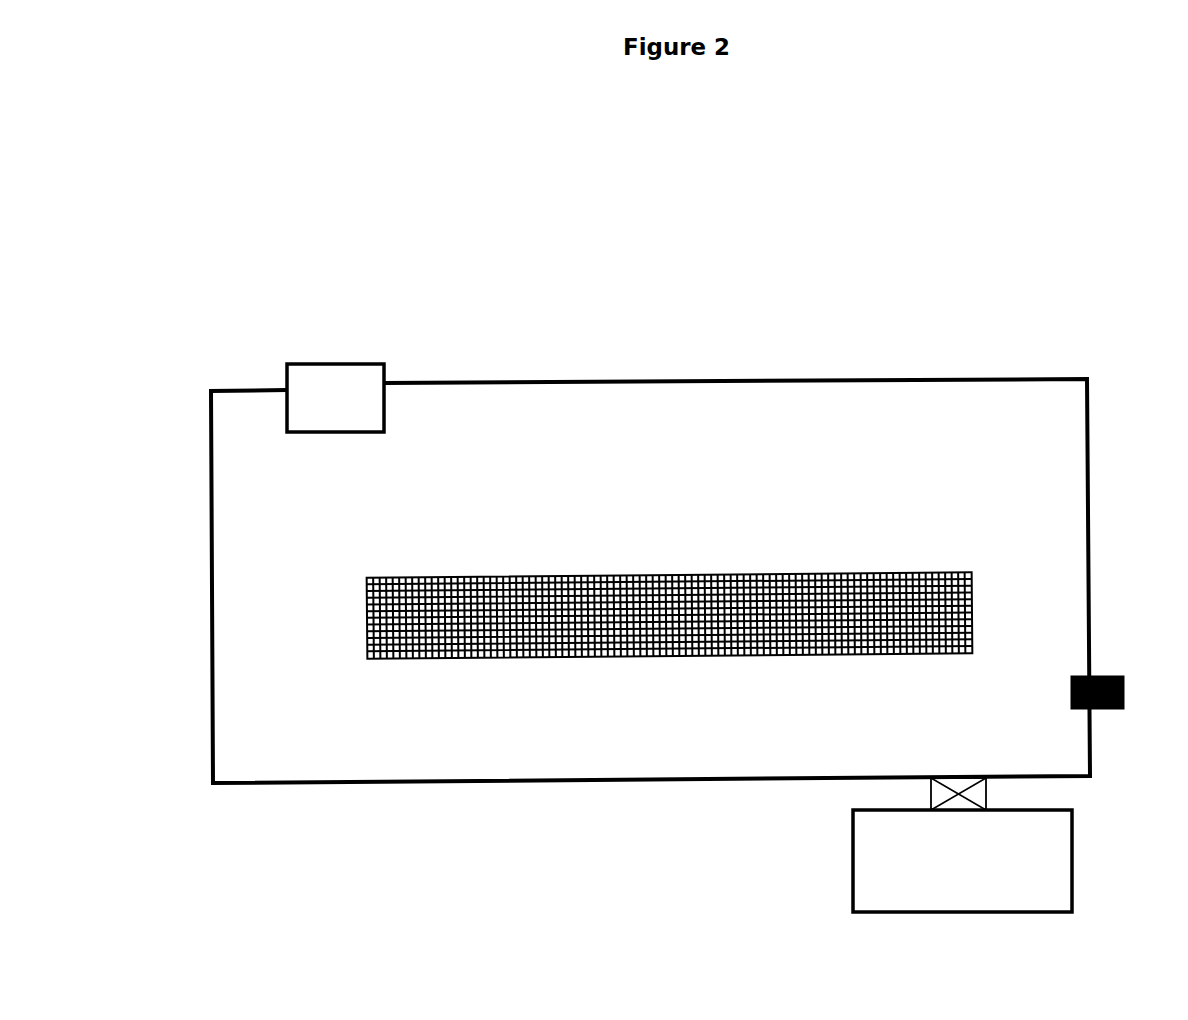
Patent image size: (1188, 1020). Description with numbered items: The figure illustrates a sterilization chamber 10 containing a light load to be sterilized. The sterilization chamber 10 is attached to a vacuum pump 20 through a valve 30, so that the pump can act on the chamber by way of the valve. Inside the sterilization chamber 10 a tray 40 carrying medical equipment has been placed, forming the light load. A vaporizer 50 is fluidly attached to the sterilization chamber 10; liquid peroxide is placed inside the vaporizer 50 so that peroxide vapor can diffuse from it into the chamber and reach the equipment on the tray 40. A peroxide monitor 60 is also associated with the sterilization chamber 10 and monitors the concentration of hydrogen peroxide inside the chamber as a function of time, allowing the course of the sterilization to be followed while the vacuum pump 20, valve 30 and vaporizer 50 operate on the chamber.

The sterilization chamber 10 is at (872, 370).
The vacuum pump 20 is at (835, 867).
The valve 30 is at (889, 793).
The tray 40 is at (981, 573).
The vaporizer 50 is at (402, 349).
The peroxide monitor 60 is at (1116, 663).